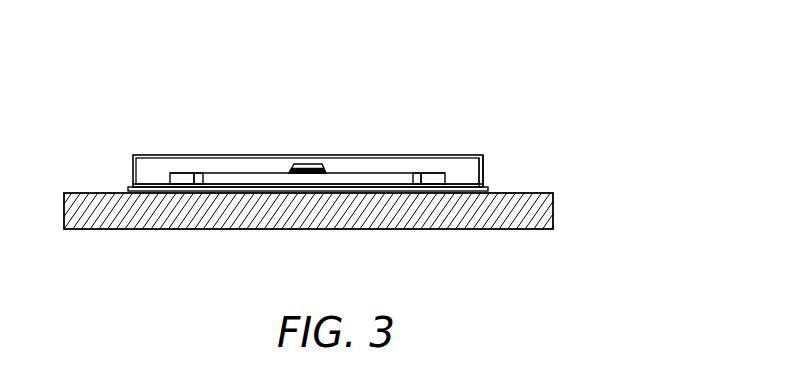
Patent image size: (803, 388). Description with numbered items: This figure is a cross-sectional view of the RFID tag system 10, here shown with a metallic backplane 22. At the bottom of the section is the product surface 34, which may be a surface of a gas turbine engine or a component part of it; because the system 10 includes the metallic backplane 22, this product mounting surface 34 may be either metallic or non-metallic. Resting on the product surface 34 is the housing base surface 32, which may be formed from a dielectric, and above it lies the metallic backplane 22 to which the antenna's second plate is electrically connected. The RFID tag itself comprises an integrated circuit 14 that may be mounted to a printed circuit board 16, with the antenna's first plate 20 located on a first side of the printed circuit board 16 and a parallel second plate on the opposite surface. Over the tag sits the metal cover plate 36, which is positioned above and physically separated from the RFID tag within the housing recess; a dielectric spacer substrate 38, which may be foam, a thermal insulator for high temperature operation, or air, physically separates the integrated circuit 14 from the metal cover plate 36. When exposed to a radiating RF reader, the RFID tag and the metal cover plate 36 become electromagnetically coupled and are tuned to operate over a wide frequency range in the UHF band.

The RFID tag system 10 is at (481, 85).
The integrated circuit 14 is at (318, 160).
The printed circuit board 16 is at (210, 173).
The first plate 20 is at (249, 170).
The metallic backplane 22 is at (133, 186).
The housing base surface 32 is at (130, 191).
The product surface 34 is at (383, 223).
The metal cover plate 36 is at (438, 155).
The dielectric spacer substrate 38 is at (486, 167).